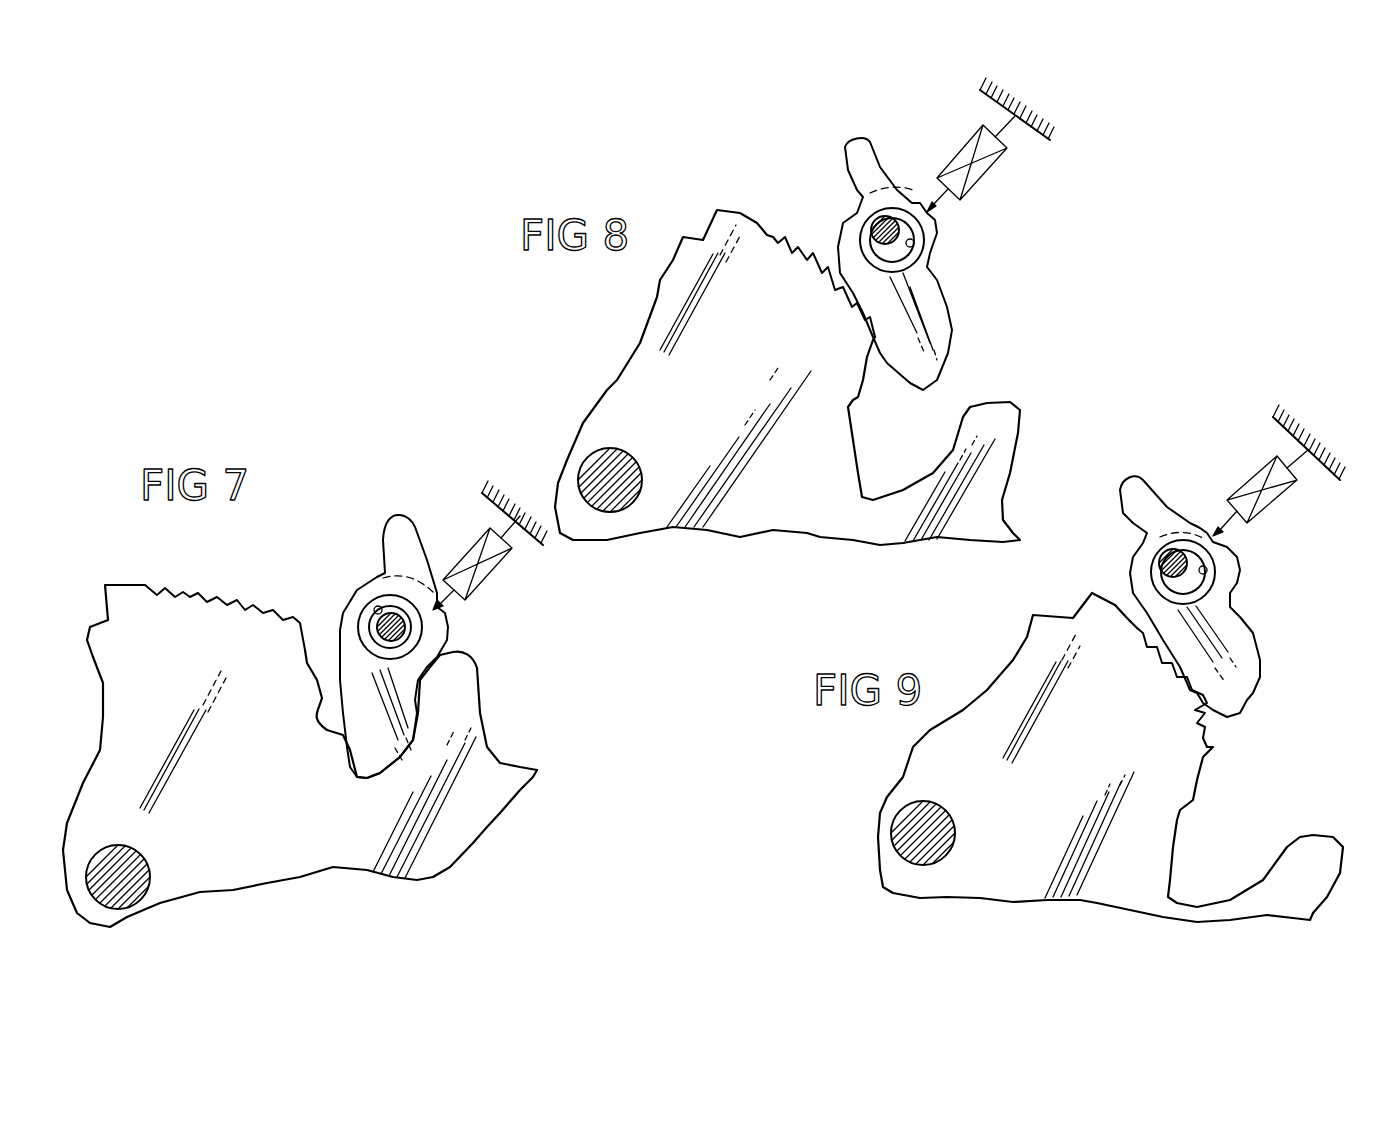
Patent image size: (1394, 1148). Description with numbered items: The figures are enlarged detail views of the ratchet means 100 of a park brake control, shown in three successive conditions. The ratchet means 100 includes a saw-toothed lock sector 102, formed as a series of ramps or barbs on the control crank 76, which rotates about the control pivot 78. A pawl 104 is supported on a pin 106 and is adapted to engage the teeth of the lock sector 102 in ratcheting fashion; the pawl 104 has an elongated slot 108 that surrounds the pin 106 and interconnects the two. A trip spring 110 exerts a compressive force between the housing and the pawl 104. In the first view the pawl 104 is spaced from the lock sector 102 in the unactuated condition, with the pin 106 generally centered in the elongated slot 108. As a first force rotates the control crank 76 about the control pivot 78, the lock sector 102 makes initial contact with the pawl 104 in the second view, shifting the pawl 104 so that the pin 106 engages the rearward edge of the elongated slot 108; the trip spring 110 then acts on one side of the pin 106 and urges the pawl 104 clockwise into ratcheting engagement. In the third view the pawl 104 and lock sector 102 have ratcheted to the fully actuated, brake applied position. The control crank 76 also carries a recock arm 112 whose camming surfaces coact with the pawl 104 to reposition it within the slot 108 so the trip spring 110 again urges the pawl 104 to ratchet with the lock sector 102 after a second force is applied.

In FIG. 7, the control crank 76 is at (487, 827).
In FIG. 8, the control crank 76 is at (777, 533).
In FIG. 9, the control crank 76 is at (880, 877).
In FIG. 7, the control pivot 78 is at (150, 870).
In FIG. 8, the control pivot 78 is at (640, 467).
In FIG. 9, the control pivot 78 is at (890, 833).
In FIG. 7, the ratchet means 100 is at (183, 596).
In FIG. 8, the ratchet means 100 is at (777, 229).
In FIG. 9, the ratchet means 100 is at (1206, 737).
In FIG. 7, the lock sector 102 is at (250, 613).
In FIG. 8, the lock sector 102 is at (803, 253).
In FIG. 9, the lock sector 102 is at (1208, 712).
In FIG. 7, the pawl 104 is at (377, 578).
In FIG. 8, the pawl 104 is at (940, 280).
In FIG. 9, the pawl 104 is at (1253, 630).
In FIG. 7, the pin 106 is at (403, 627).
In FIG. 8, the pin 106 is at (887, 218).
In FIG. 9, the pin 106 is at (1171, 550).
In FIG. 7, the elongated slot 108 is at (375, 606).
In FIG. 8, the elongated slot 108 is at (914, 244).
In FIG. 9, the elongated slot 108 is at (1207, 570).
In FIG. 7, the trip spring 110 is at (492, 578).
In FIG. 8, the trip spring 110 is at (977, 180).
In FIG. 9, the trip spring 110 is at (1270, 510).
In FIG. 7, the recock arm 112 is at (473, 677).
In FIG. 8, the recock arm 112 is at (1007, 403).
In FIG. 9, the recock arm 112 is at (1313, 837).